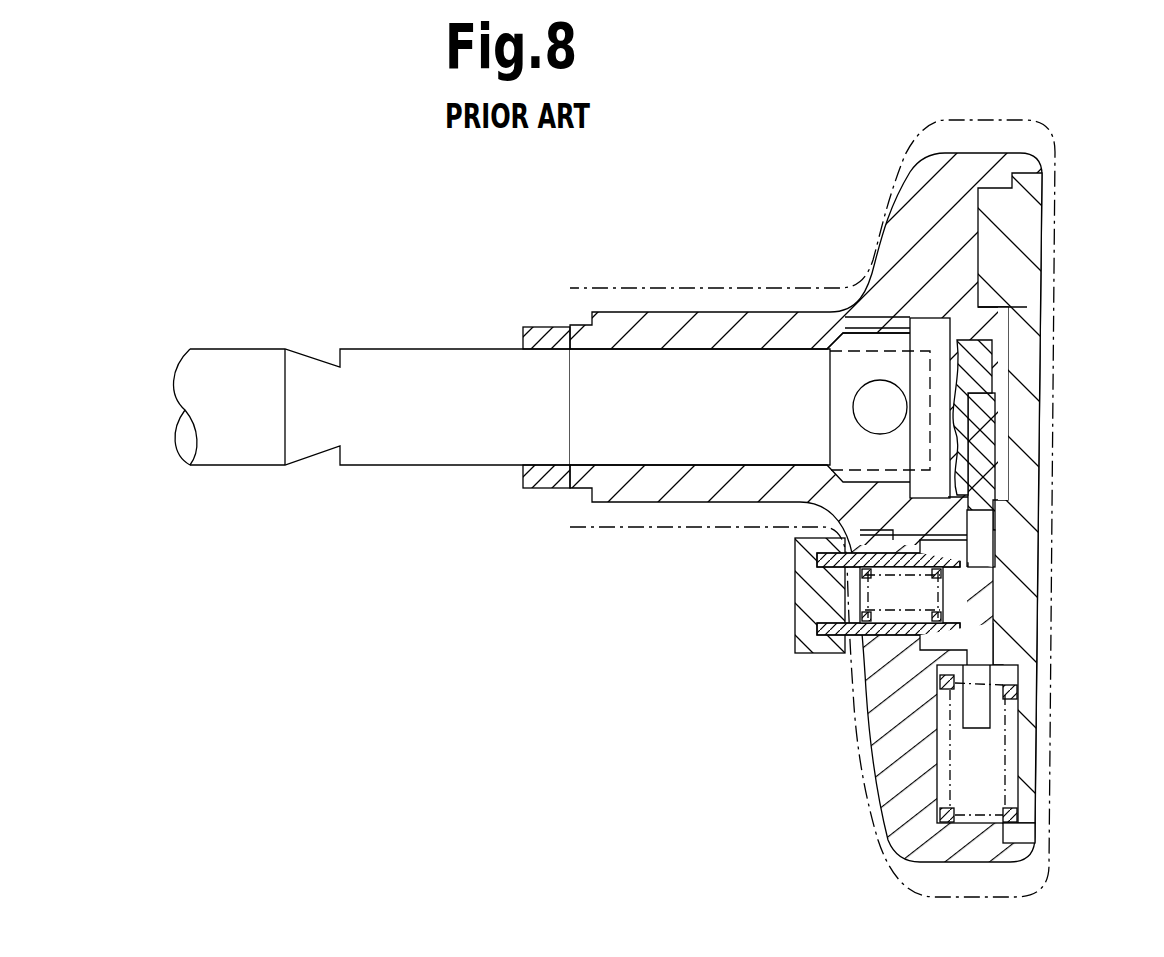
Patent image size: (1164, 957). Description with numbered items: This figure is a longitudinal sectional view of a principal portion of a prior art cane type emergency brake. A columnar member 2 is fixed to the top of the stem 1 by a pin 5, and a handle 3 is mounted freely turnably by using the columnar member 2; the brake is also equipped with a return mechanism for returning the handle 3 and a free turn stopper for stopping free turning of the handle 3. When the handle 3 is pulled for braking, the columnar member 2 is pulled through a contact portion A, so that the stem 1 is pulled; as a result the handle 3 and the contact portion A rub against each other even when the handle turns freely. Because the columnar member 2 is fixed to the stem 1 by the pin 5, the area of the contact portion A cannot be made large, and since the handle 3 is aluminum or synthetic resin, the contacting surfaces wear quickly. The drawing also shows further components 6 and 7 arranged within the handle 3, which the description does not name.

The stem 1 is at (373, 363).
The columnar member 2 is at (986, 336).
The handle 3 is at (905, 205).
The pin 5 is at (858, 408).
The plate 6 is at (1010, 425).
The switch 7 is at (823, 666).
The contact portion A is at (910, 320).